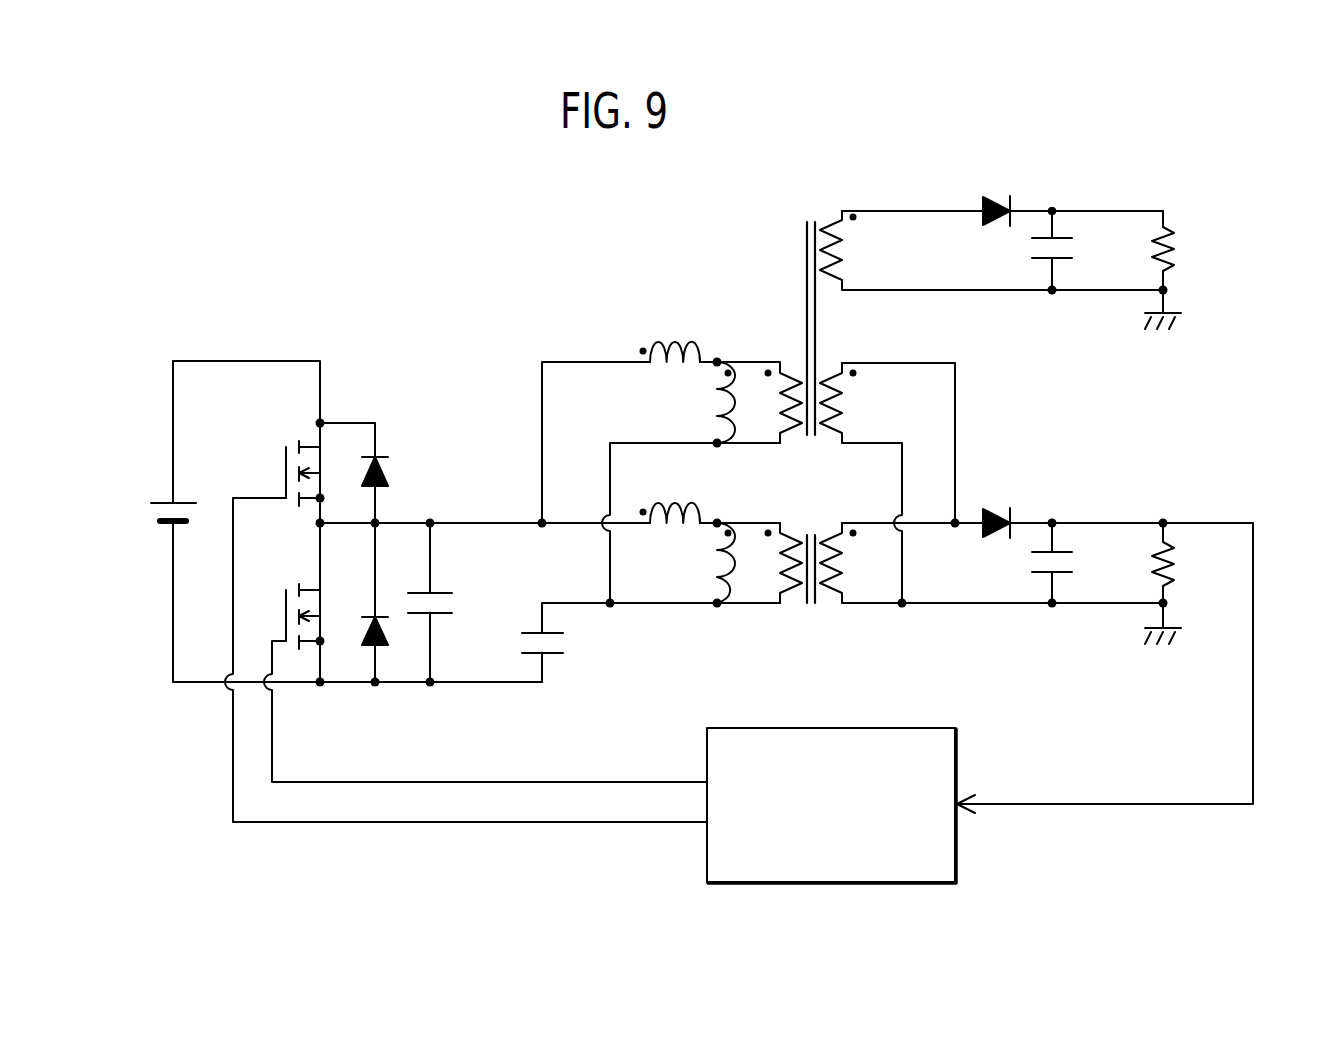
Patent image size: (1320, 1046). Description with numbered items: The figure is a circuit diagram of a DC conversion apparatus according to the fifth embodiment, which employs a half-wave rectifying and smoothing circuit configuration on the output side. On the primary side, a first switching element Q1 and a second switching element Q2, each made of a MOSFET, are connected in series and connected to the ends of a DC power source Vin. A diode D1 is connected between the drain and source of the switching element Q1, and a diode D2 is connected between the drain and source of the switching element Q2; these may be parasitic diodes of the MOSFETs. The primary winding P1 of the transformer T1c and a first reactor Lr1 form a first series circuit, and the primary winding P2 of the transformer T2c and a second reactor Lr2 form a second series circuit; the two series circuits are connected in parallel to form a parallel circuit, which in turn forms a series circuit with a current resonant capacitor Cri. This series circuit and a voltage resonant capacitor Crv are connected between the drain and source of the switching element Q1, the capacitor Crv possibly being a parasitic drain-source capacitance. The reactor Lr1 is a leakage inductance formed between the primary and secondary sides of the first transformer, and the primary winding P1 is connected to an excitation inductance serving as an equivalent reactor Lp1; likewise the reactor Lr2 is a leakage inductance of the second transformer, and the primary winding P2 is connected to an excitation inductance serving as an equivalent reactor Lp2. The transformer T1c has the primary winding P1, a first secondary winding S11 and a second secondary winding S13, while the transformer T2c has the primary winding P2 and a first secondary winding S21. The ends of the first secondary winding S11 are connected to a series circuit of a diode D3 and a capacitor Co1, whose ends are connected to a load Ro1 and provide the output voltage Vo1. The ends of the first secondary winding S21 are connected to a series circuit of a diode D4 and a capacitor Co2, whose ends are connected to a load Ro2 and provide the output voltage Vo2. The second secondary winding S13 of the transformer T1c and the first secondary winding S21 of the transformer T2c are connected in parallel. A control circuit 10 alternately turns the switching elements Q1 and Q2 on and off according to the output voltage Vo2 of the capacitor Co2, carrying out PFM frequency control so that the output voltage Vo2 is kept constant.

The control circuit 10 is at (957, 840).
The DC power source Vin is at (184, 529).
The first switching element Q1 is at (290, 601).
The second switching element Q2 is at (290, 459).
The diode D1 is at (386, 602).
The diode D2 is at (365, 473).
The voltage resonant capacitor Crv is at (452, 602).
The current resonant capacitor Cri is at (566, 642).
The first reactor Lr1 is at (675, 337).
The second reactor Lr2 is at (675, 497).
The equivalent reactor Lp1 is at (702, 402).
The equivalent reactor Lp2 is at (702, 563).
The primary winding P1 is at (774, 403).
The primary winding P2 is at (774, 563).
The transformer T1c is at (815, 311).
The transformer T2c is at (812, 552).
The first secondary winding S11 is at (853, 250).
The second secondary winding S13 is at (853, 403).
The first secondary winding S21 is at (853, 563).
The diode D3 is at (996, 195).
The diode D4 is at (996, 508).
The output voltage Vo1 is at (1052, 203).
The output voltage Vo2 is at (1052, 516).
The capacitor Co1 is at (1078, 250).
The capacitor Co2 is at (1078, 563).
The load Ro1 is at (1188, 250).
The load Ro2 is at (1188, 563).